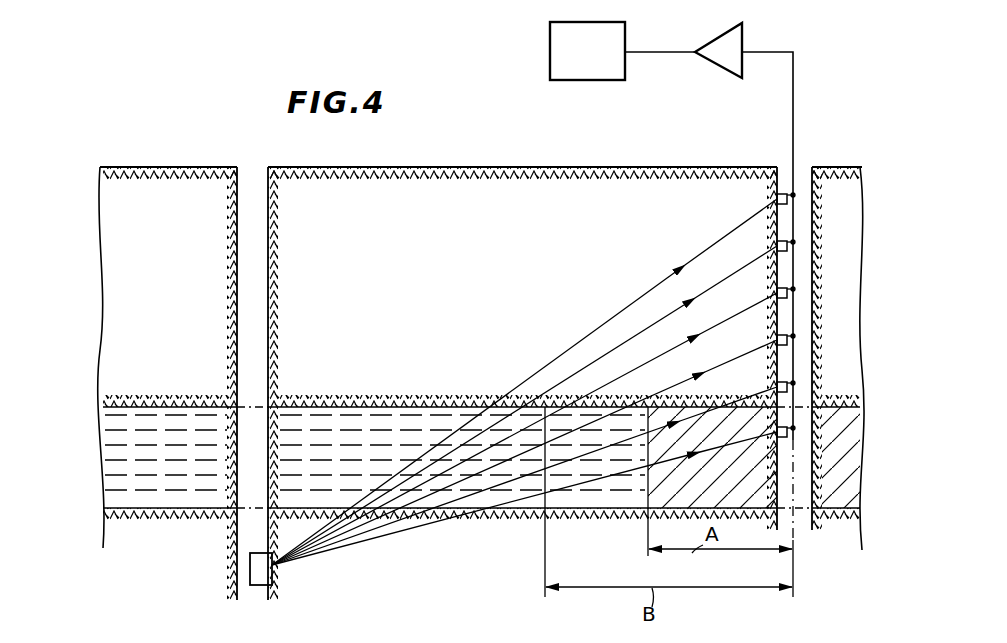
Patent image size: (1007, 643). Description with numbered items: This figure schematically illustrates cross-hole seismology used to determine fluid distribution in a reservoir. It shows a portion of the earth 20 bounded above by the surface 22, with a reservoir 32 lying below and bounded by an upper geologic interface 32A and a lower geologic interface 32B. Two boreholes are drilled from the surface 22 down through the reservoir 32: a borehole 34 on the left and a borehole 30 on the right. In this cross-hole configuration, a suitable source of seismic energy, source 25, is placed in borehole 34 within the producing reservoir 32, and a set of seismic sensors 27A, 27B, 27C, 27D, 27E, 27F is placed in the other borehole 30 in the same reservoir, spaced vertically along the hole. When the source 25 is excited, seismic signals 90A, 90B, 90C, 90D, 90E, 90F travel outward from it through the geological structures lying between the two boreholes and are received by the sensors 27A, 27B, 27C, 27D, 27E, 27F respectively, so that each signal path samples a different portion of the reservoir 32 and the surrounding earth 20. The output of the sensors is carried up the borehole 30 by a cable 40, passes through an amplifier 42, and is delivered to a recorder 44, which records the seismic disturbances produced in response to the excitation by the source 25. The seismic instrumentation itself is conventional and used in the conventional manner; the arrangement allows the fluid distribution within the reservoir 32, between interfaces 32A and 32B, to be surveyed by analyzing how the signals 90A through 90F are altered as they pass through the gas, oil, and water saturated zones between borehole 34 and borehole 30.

The earth 20 is at (169, 308).
The surface 22 is at (160, 167).
The second borehole 34 is at (240, 167).
The bore hole 30 is at (812, 194).
The reservoir 32 is at (125, 447).
The geologic interface 32A is at (148, 407).
The geologic interface 32B is at (128, 508).
The source 25 is at (276, 580).
The sensor 27A is at (783, 437).
The sensor 27B is at (783, 392).
The sensor 27C is at (783, 345).
The sensor 27D is at (783, 298).
The sensor 27E is at (783, 251).
The sensor 27F is at (783, 204).
The signal 90A is at (415, 528).
The signal 90B is at (490, 490).
The signal 90C is at (640, 401).
The signal 90D is at (647, 363).
The signal 90E is at (665, 317).
The signal 90F is at (720, 240).
The cable 40 is at (795, 116).
The amplifier 42 is at (728, 72).
The recorder 44 is at (560, 60).